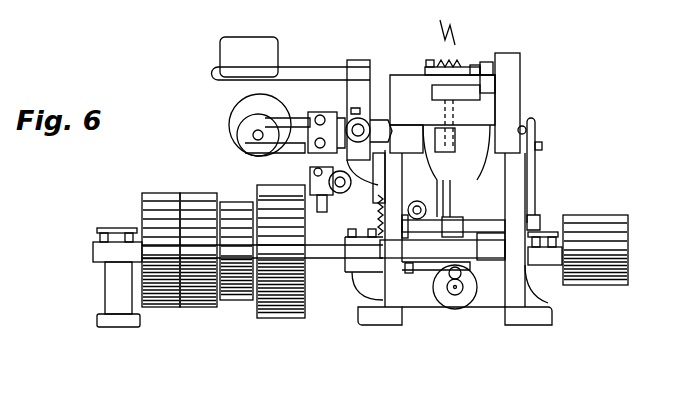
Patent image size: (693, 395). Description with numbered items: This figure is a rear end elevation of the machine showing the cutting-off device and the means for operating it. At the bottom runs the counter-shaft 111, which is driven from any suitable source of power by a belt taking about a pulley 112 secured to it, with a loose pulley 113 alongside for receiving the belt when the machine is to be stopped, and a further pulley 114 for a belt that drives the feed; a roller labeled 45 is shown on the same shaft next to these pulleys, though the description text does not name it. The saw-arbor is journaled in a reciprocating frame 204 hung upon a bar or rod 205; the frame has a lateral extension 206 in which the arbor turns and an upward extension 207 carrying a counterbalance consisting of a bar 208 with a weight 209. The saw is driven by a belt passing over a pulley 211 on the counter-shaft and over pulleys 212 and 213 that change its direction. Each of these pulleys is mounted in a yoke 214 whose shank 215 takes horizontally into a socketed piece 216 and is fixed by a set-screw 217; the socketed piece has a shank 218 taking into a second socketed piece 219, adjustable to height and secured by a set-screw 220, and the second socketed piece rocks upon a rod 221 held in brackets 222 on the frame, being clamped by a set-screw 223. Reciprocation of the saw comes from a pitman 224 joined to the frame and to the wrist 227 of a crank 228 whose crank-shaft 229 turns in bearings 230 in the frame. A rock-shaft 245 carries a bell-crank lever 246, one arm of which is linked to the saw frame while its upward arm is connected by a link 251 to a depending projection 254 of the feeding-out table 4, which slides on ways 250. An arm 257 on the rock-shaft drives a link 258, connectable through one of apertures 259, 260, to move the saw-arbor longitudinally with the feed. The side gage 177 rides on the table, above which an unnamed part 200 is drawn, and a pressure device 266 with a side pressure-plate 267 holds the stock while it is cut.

The feeding-out table 4 is at (442, 106).
The roller 45 is at (288, 318).
The counter-shaft 111 is at (338, 260).
The pulley 112 is at (199, 193).
The loose pulley 113 is at (151, 193).
The pulley 114 is at (612, 214).
The side gage 177 is at (430, 60).
The arm 200 is at (439, 25).
The reciprocating frame 204 is at (385, 122).
The bar or rod 205 is at (370, 95).
The lateral extension 206 is at (390, 130).
The upward extension 207 is at (322, 110).
The bar 208 is at (310, 68).
The weight 209 is at (249, 57).
The pulley 211 is at (236, 300).
The pulley 212 is at (237, 135).
The pulley 213 is at (232, 105).
The yoke 214 is at (285, 153).
The shank 215 is at (300, 117).
The socketed piece 216 is at (316, 116).
The set-screw 217 is at (268, 130).
The shank 218 is at (322, 212).
The second socketed piece 219 is at (314, 190).
The set-screw 220 is at (328, 195).
The rod 221 is at (354, 182).
The brackets 222 is at (386, 180).
The set-screw 223 is at (362, 165).
The pitman 224 is at (478, 262).
The wrist 227 is at (449, 275).
The crank 228 is at (446, 300).
The crank-shaft 229 is at (455, 296).
The bearings 230 is at (490, 305).
The rock-shaft 245 is at (478, 222).
The bell-crank lever 246 is at (443, 192).
The ways 250 is at (497, 92).
The link 251 is at (450, 152).
The depending projection 254 is at (457, 135).
The arm 257 is at (536, 172).
The link 258 is at (524, 126).
The aperture 259 is at (543, 145).
The aperture 260 is at (537, 121).
The pressure device 266 is at (496, 64).
The side pressure-plate 267 is at (476, 64).